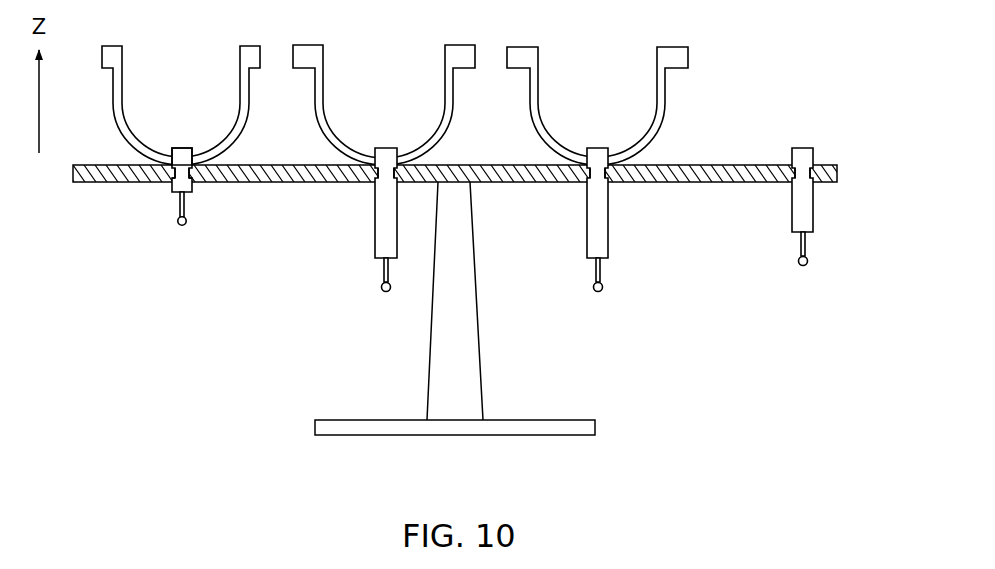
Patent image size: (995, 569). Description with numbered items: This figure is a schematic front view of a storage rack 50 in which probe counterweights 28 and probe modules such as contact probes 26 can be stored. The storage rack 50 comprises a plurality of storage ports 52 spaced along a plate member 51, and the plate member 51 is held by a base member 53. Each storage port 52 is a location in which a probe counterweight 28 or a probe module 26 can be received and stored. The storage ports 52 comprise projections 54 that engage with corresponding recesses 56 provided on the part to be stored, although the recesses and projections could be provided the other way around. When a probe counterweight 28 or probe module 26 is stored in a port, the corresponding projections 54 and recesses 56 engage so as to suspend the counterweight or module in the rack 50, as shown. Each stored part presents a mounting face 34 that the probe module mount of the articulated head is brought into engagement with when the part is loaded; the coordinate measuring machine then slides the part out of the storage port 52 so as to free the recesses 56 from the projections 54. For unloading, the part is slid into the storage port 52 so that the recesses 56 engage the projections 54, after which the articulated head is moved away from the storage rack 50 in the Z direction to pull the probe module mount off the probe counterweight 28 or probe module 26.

The contact probe 26 is at (159, 197).
The probe counterweight 28 is at (119, 137).
The mounting face 34 is at (183, 147).
The storage rack 50 is at (808, 77).
The plate member 51 is at (683, 163).
The storage port 52 is at (196, 189).
The base member 53 is at (521, 389).
The projection 54 is at (170, 178).
The recess 56 is at (187, 179).